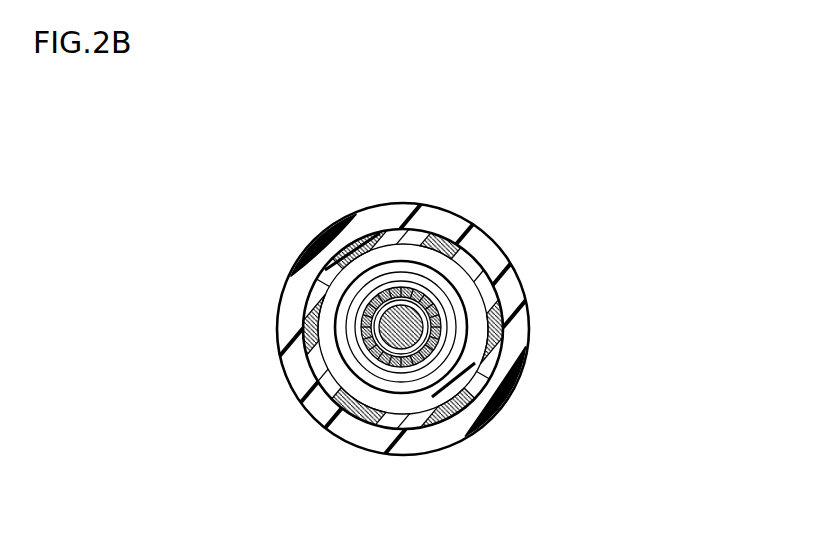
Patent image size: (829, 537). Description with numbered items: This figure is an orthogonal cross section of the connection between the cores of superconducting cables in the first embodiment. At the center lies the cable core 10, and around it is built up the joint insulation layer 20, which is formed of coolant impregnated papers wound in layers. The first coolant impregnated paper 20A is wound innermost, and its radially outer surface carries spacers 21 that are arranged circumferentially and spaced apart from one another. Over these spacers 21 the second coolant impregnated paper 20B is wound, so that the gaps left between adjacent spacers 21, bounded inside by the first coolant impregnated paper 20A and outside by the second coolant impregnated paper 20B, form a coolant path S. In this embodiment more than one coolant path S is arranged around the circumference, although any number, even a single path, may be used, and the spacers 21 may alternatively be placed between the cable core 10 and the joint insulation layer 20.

The joint insulation layer 20 is at (285, 160).
The first coolant impregnated paper 20A is at (325, 297).
The second coolant impregnated paper 20B is at (330, 248).
The spacer 21 is at (470, 232).
The cable core 10 is at (400, 374).
The coolant path S is at (410, 240).